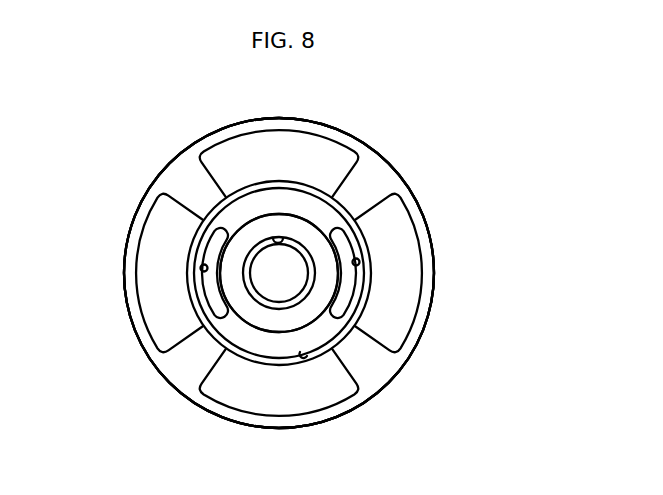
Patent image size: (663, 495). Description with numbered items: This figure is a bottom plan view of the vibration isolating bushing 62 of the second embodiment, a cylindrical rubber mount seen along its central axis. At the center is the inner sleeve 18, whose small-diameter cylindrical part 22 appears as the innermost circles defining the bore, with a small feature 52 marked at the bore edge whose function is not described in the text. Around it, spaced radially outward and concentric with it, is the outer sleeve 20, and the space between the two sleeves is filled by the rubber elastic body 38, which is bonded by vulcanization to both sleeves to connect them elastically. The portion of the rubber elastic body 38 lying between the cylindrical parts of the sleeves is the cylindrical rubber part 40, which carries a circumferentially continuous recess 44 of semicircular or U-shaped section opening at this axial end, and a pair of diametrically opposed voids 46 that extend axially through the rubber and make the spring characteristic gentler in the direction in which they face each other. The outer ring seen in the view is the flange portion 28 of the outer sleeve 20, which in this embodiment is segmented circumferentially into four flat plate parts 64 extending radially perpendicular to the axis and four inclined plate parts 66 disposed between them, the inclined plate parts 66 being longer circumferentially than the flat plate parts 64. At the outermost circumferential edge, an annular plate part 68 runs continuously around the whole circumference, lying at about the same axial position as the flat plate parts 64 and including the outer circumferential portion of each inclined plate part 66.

The inner sleeve 18 is at (329, 214).
The outer sleeve 20 is at (411, 387).
The cylindrical part 22 is at (252, 313).
The flange portion 28 is at (482, 166).
The rubber elastic body 38 is at (181, 313).
The cylindrical rubber part 40 is at (236, 213).
The recess 44 is at (304, 357).
The voids 46 is at (205, 267).
The bore notch 52 is at (278, 244).
The vibration isolating bushing 62 is at (208, 104).
The flat plate parts 64 is at (192, 178).
The inclined plate parts 66 is at (271, 150).
The annular plate part 68 is at (415, 220).